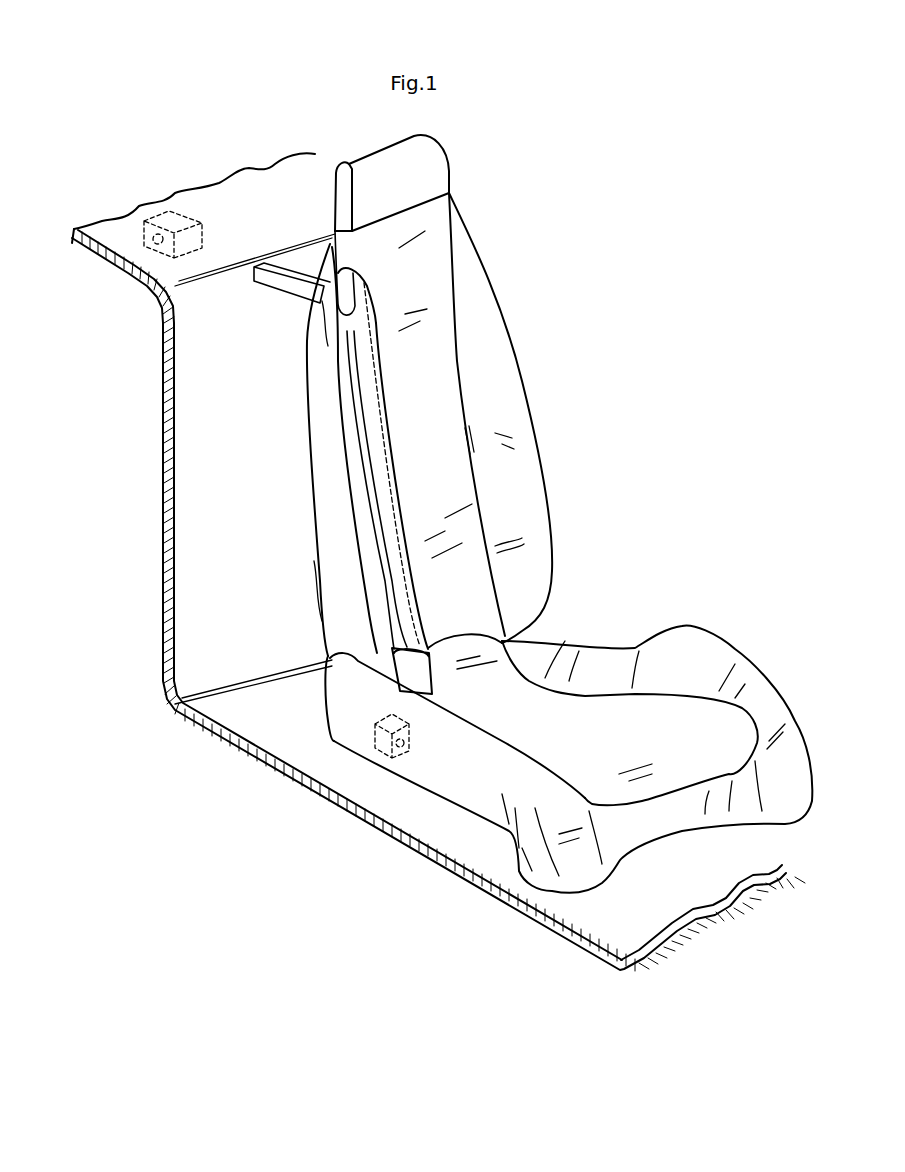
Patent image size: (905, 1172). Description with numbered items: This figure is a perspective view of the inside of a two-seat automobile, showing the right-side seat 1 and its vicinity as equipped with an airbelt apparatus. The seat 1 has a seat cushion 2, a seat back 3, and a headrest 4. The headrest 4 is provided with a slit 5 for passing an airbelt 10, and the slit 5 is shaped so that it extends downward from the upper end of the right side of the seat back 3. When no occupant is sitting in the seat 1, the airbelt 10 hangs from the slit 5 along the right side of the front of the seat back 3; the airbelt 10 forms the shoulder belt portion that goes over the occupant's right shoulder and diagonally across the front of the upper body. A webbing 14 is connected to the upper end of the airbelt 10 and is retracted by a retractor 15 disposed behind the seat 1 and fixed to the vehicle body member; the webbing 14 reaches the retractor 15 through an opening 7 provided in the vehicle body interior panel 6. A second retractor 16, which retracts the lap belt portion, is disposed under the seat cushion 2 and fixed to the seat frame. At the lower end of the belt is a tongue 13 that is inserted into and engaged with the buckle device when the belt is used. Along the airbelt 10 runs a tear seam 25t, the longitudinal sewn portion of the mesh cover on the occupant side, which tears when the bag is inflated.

The seat 1 is at (623, 501).
The seat cushion 2 is at (577, 715).
The seat back 3 is at (457, 483).
The headrest 4 is at (438, 176).
The slit 5 is at (343, 248).
The vehicle body interior panel 6 is at (178, 321).
The opening 7 is at (304, 258).
The airbelt 10 is at (383, 470).
The tongue 13 is at (427, 647).
The webbing 14 is at (274, 273).
The retractor 15 is at (167, 210).
The retractor 16 is at (383, 749).
The tear seam 25t is at (383, 421).